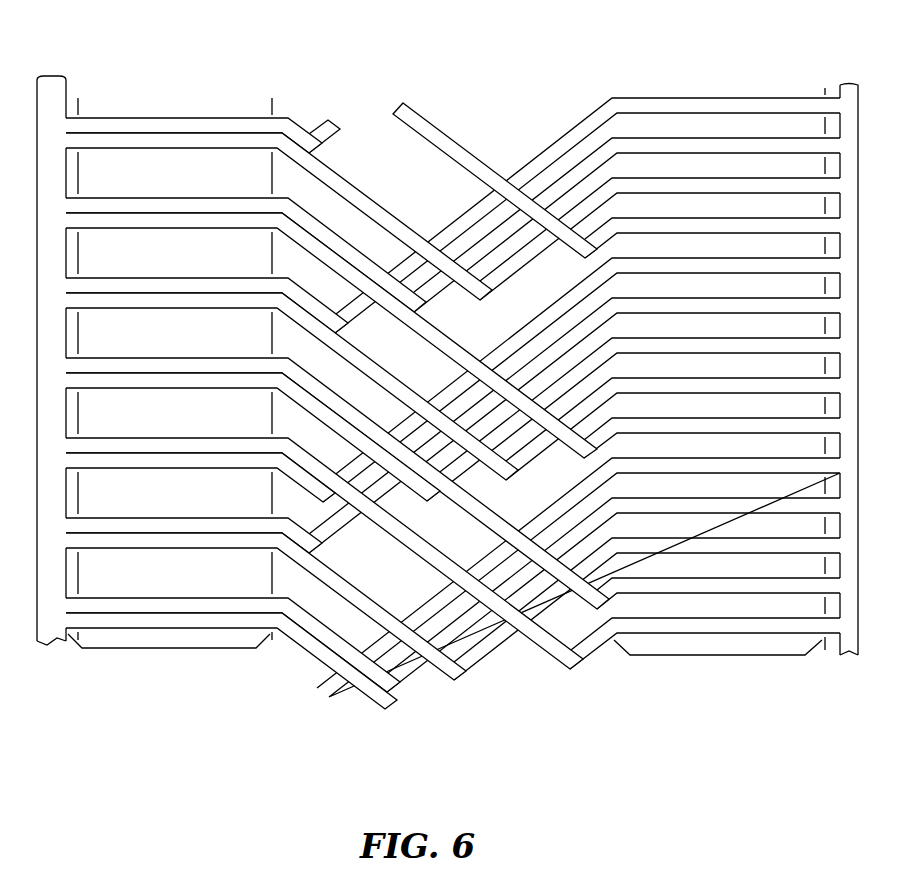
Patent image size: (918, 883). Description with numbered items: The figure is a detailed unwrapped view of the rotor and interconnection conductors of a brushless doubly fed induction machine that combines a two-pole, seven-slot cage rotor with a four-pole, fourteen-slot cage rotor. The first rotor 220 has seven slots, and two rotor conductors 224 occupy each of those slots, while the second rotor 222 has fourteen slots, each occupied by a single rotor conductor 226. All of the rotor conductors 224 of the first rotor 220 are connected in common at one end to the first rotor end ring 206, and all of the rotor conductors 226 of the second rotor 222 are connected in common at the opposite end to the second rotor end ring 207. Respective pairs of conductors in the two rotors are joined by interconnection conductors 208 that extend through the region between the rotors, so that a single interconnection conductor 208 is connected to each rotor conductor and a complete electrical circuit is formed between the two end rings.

The first rotor end ring 206 is at (50, 92).
The second rotor end ring 207 is at (843, 652).
The interconnection conductor 208 is at (430, 130).
The first rotor 220 is at (170, 652).
The second rotor 222 is at (718, 657).
The rotor conductor 224 is at (188, 130).
The rotor conductor 226 is at (650, 104).